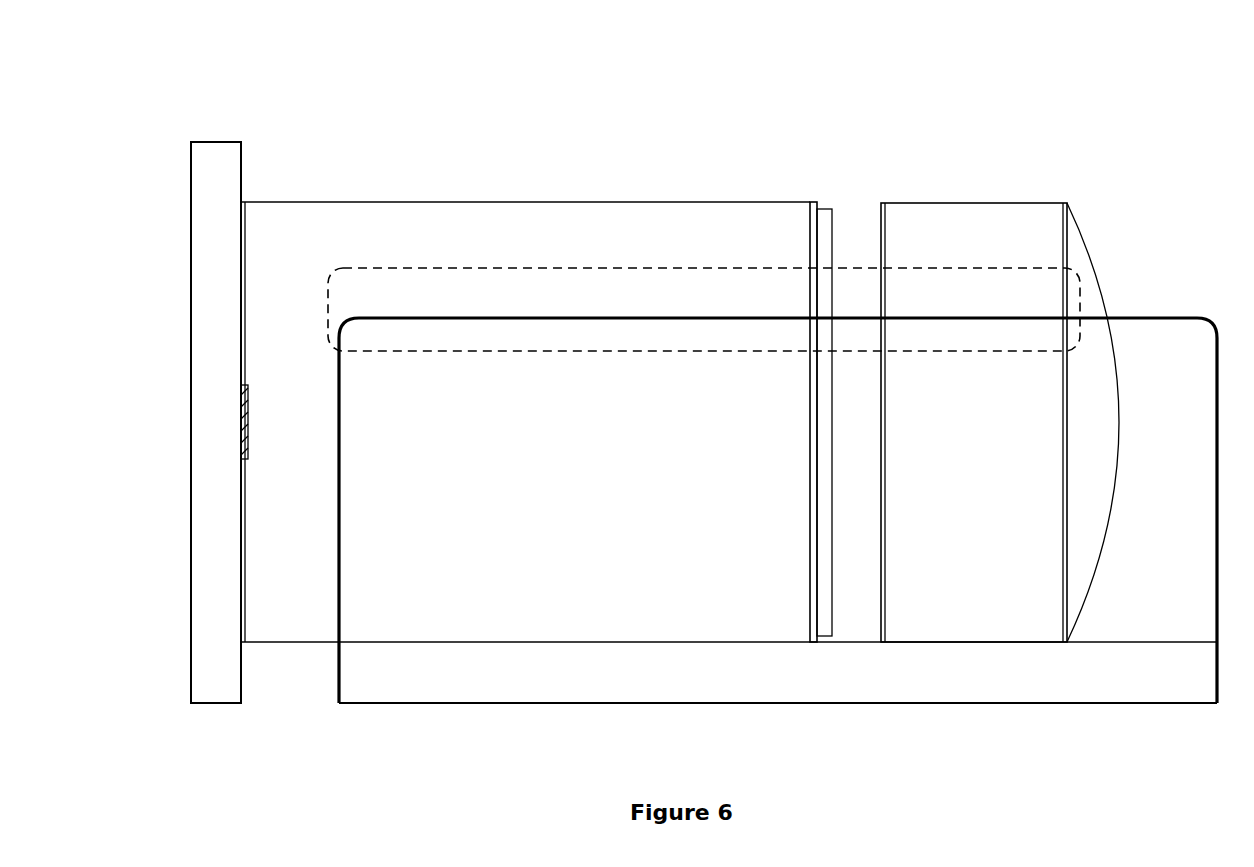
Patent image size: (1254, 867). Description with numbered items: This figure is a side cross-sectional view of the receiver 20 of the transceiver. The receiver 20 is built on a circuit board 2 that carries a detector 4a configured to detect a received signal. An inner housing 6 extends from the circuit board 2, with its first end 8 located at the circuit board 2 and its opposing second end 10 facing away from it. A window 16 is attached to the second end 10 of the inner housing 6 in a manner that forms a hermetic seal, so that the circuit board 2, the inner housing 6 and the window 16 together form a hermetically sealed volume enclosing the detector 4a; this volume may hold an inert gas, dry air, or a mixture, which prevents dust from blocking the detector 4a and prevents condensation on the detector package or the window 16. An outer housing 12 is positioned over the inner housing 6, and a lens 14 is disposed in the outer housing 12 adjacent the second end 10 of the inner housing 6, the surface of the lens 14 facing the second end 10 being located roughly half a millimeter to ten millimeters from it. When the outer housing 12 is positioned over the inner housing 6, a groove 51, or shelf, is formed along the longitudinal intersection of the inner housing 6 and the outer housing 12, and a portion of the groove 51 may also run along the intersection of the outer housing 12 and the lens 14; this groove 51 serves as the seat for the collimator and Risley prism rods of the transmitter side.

The receiver 20 is at (686, 73).
The circuit board 2 is at (218, 153).
The detector 4a is at (241, 425).
The inner housing 6 is at (503, 202).
The first end 8 is at (245, 222).
The second end 10 is at (812, 212).
The window 16 is at (826, 215).
The lens 14 is at (1005, 434).
The groove 51 is at (618, 268).
The outer housing 12 is at (840, 703).